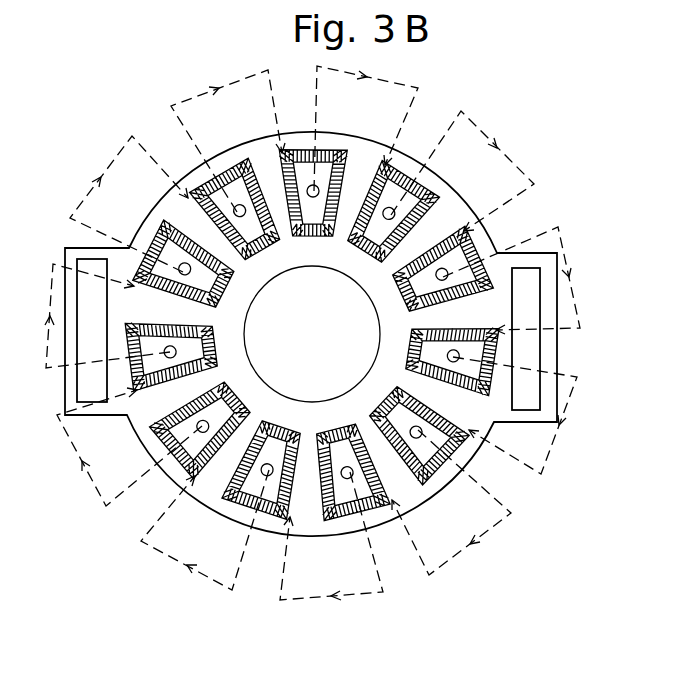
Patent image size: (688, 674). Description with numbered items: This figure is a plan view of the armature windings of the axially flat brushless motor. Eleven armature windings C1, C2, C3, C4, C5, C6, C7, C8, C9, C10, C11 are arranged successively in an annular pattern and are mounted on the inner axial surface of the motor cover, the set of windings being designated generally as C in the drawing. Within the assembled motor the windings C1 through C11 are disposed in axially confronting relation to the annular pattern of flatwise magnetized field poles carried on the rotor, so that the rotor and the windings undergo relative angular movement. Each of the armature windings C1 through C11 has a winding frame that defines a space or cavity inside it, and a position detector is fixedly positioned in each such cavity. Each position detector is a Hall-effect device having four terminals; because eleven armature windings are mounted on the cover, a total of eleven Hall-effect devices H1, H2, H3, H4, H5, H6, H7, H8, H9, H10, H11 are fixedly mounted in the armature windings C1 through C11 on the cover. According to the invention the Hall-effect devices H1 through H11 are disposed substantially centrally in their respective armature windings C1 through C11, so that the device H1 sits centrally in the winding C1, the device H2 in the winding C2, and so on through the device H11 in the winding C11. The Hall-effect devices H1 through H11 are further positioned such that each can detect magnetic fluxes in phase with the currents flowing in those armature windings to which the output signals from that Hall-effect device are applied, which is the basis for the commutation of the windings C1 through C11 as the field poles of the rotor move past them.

The Hall-effect device H1 is at (237, 206).
The Hall-effect device H2 is at (459, 357).
The Hall-effect device H3 is at (197, 429).
The Hall-effect device H4 is at (316, 186).
The Hall-effect device H5 is at (418, 436).
The Hall-effect device H6 is at (165, 350).
The Hall-effect device H7 is at (395, 211).
The Hall-effect device H8 is at (349, 478).
The Hall-effect device H9 is at (178, 266).
The Hall-effect device H10 is at (447, 279).
The Hall-effect device H11 is at (266, 476).
The coil connecting conductor C is at (307, 564).
The armature winding C1 is at (297, 148).
The armature winding C2 is at (418, 482).
The armature winding C3 is at (136, 390).
The armature winding C4 is at (385, 160).
The armature winding C5 is at (326, 513).
The armature winding C6 is at (134, 284).
The armature winding C7 is at (466, 232).
The armature winding C8 is at (289, 520).
The armature winding C9 is at (188, 196).
The armature winding C10 is at (487, 398).
The armature winding C11 is at (195, 478).